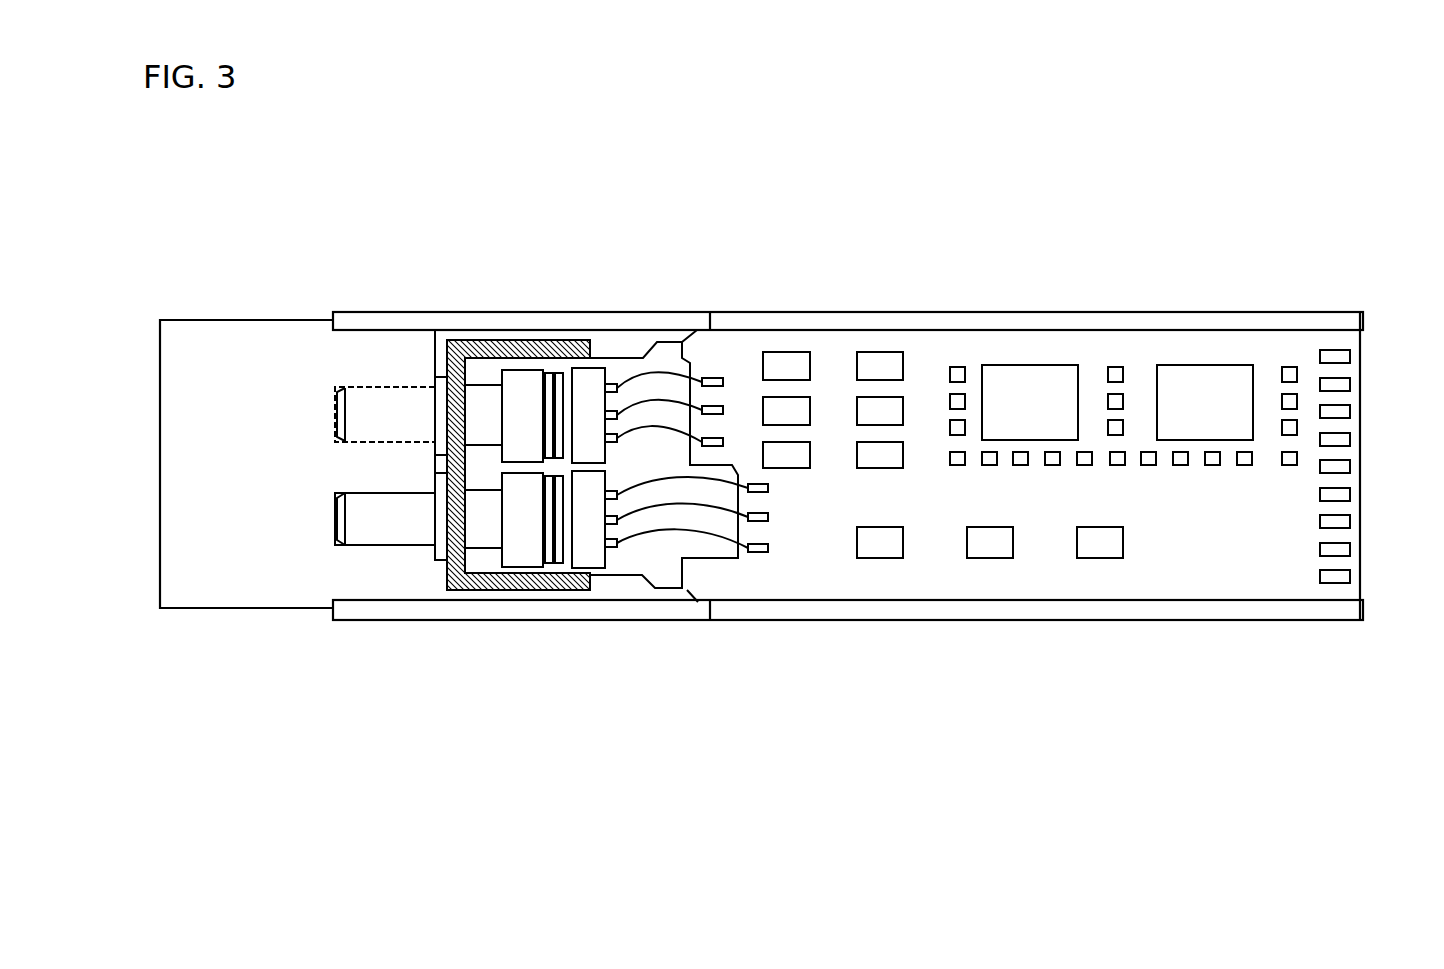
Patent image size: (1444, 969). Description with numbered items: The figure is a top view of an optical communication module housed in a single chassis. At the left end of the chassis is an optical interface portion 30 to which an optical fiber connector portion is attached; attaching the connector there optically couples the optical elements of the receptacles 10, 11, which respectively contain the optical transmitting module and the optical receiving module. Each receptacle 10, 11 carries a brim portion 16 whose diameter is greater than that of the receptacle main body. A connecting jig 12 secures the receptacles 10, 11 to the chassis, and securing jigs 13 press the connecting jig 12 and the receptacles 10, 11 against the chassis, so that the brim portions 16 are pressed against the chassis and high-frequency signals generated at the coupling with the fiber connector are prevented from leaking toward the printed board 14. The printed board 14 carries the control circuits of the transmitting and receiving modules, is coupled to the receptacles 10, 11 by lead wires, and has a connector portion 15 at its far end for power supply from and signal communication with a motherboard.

The optical interface portion 30 is at (223, 352).
The receptacle 10 is at (360, 466).
The receptacle 11 is at (372, 402).
The brim portion 16 is at (449, 367).
The connecting jig 12 is at (458, 520).
The securing jig 13 is at (562, 590).
The printed board 14 is at (1030, 348).
The connector portion 15 is at (1347, 412).